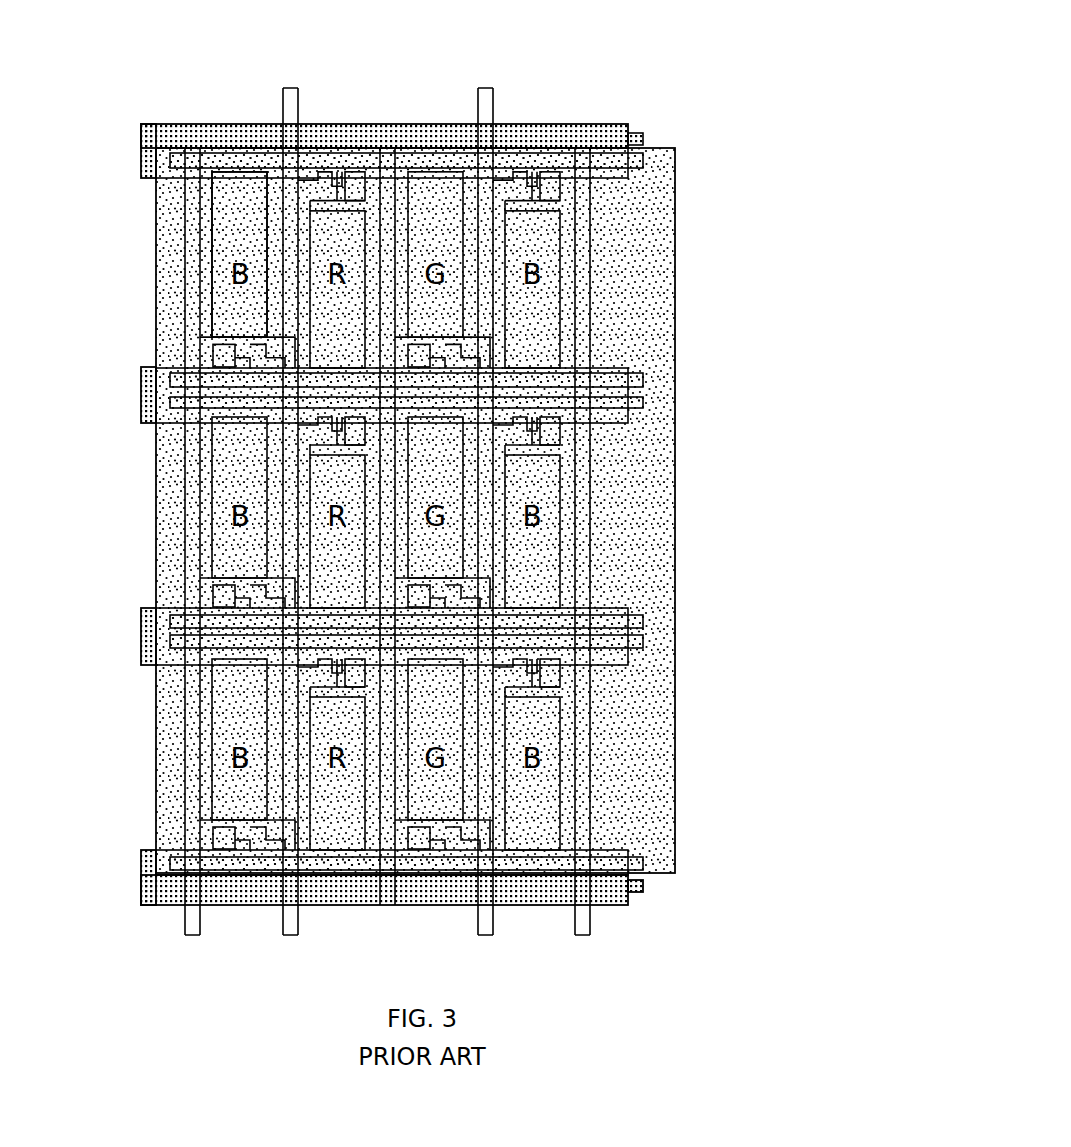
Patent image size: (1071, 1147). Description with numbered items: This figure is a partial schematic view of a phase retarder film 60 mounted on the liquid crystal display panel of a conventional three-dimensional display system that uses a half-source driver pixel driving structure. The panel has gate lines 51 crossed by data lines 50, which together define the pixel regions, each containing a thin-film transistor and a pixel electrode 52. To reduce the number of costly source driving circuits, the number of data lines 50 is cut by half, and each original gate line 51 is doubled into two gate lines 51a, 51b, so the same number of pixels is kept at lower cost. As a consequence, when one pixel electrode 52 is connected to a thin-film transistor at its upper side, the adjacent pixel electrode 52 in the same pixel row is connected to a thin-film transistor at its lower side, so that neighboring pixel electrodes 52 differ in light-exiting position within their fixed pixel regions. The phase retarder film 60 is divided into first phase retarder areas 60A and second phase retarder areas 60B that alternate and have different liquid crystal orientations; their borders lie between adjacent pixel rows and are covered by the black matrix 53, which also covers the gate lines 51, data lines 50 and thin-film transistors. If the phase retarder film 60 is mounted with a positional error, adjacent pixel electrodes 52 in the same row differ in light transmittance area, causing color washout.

The data line 50 is at (290, 88).
The gate line 51 is at (471, 474).
The gate line 51a is at (645, 135).
The gate line 51b is at (660, 148).
The pixel electrode 52 is at (220, 240).
The black matrix 53 is at (620, 124).
The phase retarder film 60 is at (704, 418).
The first phase retarder area 60A is at (667, 262).
The second phase retarder area 60B is at (667, 540).